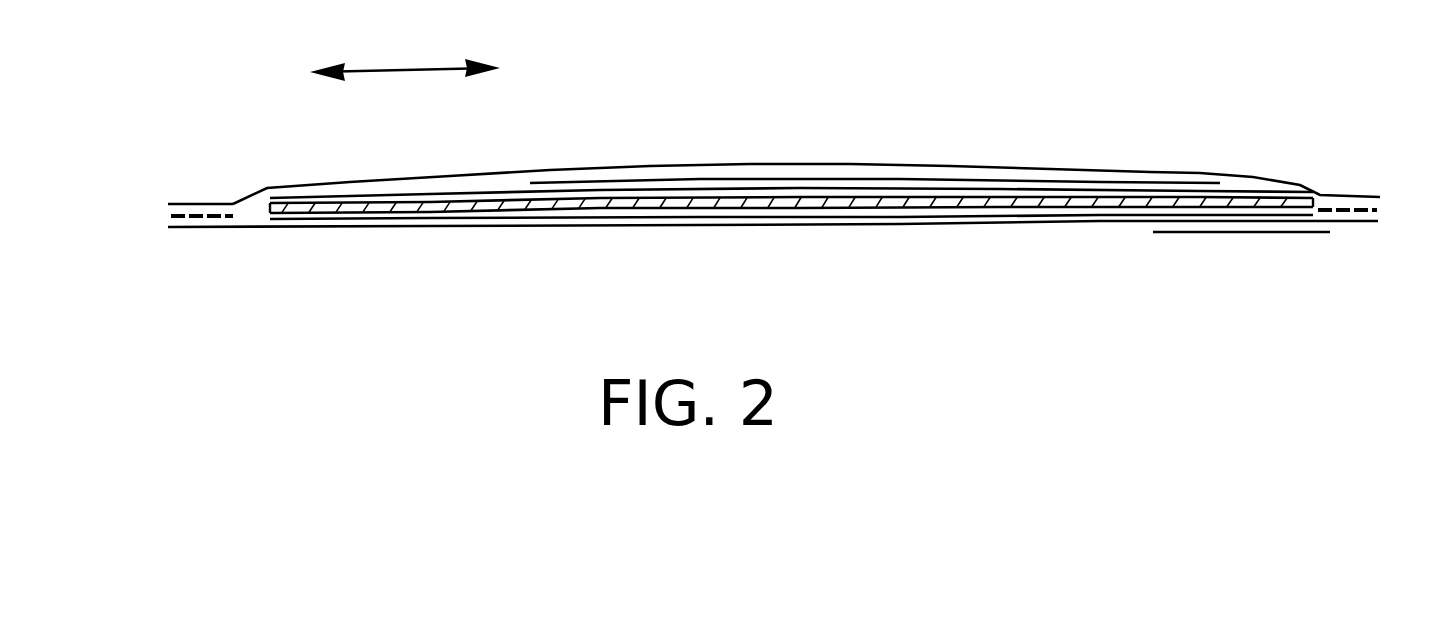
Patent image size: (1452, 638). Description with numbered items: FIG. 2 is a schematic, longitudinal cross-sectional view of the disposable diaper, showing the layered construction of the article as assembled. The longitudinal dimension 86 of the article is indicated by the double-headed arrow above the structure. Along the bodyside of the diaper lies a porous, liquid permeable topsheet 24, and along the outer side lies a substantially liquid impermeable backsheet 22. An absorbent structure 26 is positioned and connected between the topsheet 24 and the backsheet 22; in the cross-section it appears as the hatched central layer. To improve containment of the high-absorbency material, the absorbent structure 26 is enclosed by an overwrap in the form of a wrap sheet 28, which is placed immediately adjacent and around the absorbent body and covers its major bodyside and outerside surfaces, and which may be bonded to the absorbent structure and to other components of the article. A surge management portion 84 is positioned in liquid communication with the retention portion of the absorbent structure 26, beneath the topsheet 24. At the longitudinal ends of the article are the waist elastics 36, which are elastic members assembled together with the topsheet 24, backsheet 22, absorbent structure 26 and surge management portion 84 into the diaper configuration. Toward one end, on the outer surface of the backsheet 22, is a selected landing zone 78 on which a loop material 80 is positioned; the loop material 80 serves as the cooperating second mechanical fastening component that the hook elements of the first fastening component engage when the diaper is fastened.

The backsheet 22 is at (437, 227).
The topsheet 24 is at (1212, 172).
The absorbent structure 26 is at (882, 200).
The wrap sheet 28 is at (1017, 188).
The waist elastics 36 is at (168, 216).
The landing zone 78 is at (1163, 233).
The loop material 80 is at (1317, 233).
The surge management portion 84 is at (1093, 181).
The longitudinal dimension 86 is at (392, 71).